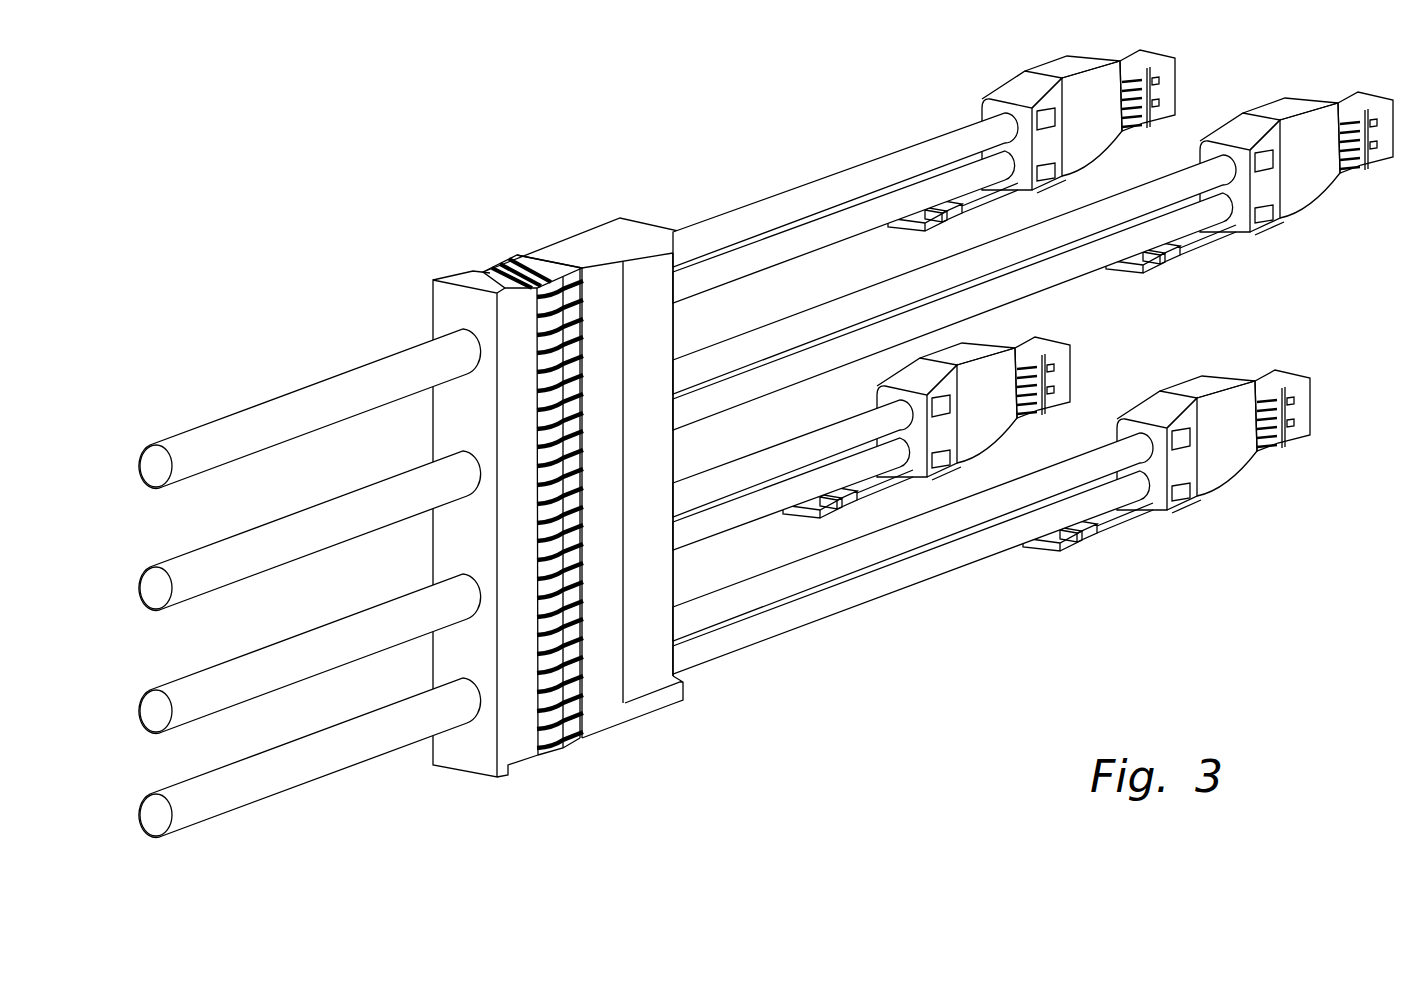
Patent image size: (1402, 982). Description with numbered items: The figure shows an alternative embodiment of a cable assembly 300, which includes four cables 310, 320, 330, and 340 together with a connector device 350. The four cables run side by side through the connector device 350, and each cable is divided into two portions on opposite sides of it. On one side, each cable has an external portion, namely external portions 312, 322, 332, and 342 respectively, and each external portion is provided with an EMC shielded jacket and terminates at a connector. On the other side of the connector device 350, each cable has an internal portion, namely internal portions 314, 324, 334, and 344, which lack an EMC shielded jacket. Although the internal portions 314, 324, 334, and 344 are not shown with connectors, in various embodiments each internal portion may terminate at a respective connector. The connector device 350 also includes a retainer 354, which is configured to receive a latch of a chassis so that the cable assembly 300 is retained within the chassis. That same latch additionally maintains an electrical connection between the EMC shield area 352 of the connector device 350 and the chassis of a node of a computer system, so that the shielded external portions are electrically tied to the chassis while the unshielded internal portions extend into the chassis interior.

The cable assembly 300 is at (262, 58).
The cable 310 is at (727, 235).
The external portion 312 is at (767, 237).
The internal portion 314 is at (302, 397).
The cable 320 is at (727, 357).
The external portion 322 is at (767, 380).
The internal portion 324 is at (302, 520).
The cable 330 is at (727, 480).
The external portion 332 is at (767, 485).
The internal portion 334 is at (302, 647).
The cable 340 is at (727, 603).
The external portion 342 is at (767, 607).
The internal portion 344 is at (302, 752).
The connector device 350 is at (593, 234).
The EMC shield area 352 is at (505, 257).
The retainer 354 is at (445, 277).